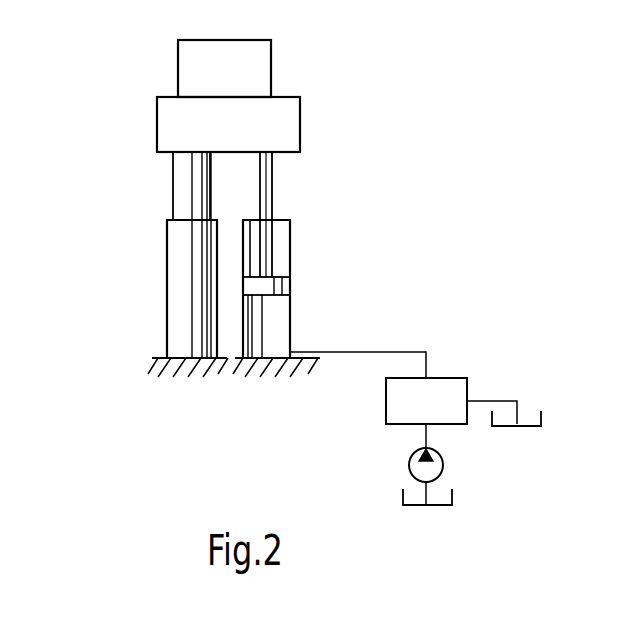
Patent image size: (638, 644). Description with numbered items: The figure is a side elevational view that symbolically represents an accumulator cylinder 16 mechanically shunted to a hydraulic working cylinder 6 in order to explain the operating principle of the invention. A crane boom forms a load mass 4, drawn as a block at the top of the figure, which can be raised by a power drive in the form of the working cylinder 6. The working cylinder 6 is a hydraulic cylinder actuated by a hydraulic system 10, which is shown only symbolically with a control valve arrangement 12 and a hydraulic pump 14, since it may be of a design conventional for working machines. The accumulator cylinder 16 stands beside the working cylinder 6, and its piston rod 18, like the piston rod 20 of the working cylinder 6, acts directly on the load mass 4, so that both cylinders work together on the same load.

The load mass 4 is at (263, 120).
The hydraulic working cylinder 6 is at (282, 258).
The hydraulic system 10 is at (475, 362).
The control valve arrangement 12 is at (395, 403).
The hydraulic pump 14 is at (444, 462).
The accumulator cylinder 16 is at (146, 278).
The piston rod of the accumulator cylinder 18 is at (187, 192).
The piston rod of the working cylinder 20 is at (263, 188).